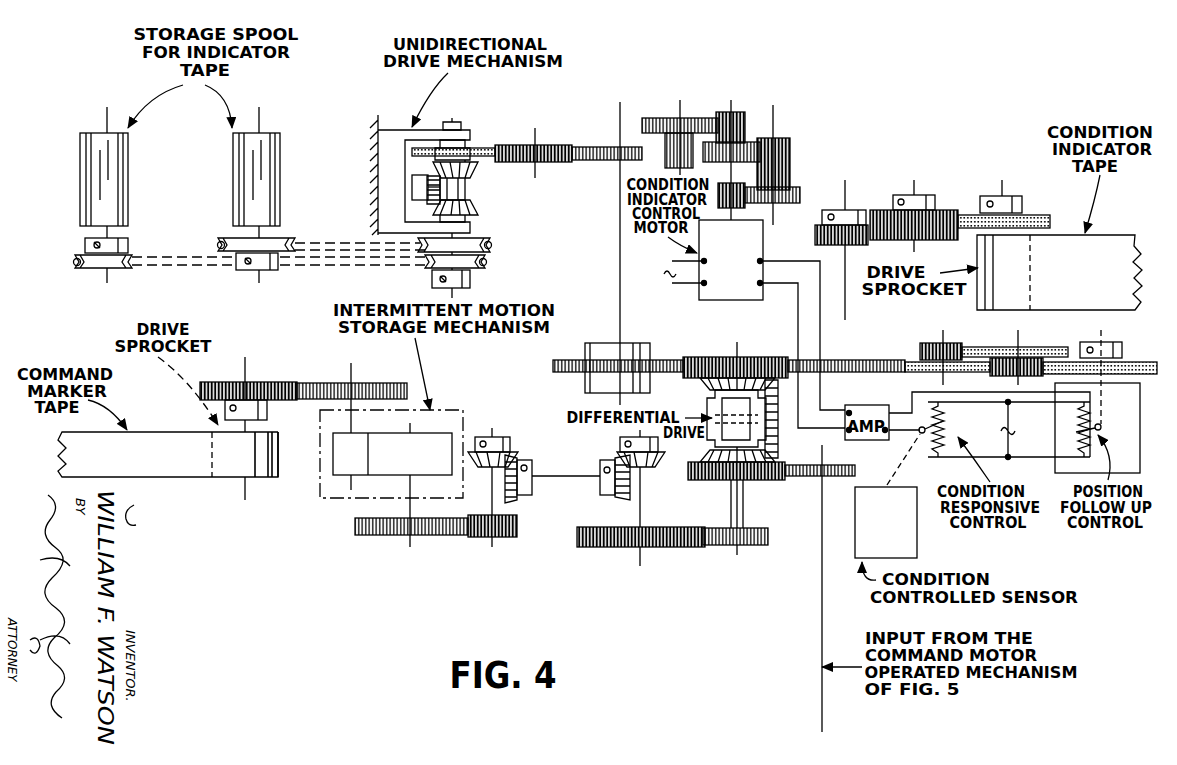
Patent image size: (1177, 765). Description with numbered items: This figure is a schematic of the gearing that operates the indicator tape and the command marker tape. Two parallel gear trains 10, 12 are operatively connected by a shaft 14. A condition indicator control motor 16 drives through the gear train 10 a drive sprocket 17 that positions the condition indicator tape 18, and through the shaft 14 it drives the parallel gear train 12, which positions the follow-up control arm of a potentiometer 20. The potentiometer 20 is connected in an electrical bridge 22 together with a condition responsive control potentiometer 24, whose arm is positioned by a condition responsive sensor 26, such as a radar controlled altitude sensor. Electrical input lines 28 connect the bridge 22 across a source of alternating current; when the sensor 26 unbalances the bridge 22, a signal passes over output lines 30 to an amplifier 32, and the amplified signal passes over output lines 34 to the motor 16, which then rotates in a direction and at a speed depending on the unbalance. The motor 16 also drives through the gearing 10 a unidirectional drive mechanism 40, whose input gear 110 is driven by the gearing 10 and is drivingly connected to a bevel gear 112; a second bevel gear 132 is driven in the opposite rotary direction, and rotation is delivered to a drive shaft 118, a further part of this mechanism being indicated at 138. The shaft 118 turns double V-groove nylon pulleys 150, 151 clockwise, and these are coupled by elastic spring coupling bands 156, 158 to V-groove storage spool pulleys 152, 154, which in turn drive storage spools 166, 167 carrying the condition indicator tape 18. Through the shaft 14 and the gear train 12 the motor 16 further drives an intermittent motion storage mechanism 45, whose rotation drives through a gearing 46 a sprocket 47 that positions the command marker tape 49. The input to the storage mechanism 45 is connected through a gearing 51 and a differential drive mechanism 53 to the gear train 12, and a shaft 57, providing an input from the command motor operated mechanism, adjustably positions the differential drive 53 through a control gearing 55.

The gear train 10 is at (798, 125).
The parallel gear train 12 is at (679, 350).
The shaft 14 is at (620, 226).
The condition indicator control motor 16 is at (722, 292).
The drive sprocket 17 is at (995, 301).
The condition indicator tape 18 is at (1079, 301).
The potentiometer 20 is at (1115, 428).
The electrical bridge 22 is at (1031, 433).
The condition responsive control potentiometer 24 is at (941, 440).
The condition responsive sensor 26 is at (881, 552).
The electrical input lines 28 is at (1006, 412).
The output lines 30 is at (905, 408).
The amplifier 32 is at (866, 440).
The output lines 34 is at (788, 292).
The unidirectional drive mechanism 40 is at (483, 141).
The intermittent motion storage mechanism 45 is at (465, 418).
The gearing 46 is at (280, 381).
The sprocket 47 is at (263, 471).
The command marker tape 49 is at (157, 477).
The gearing 51 is at (615, 551).
The differential drive mechanism 53 is at (777, 438).
The control gearing 55 is at (812, 478).
The shaft 57 is at (822, 605).
The input gear 110 is at (483, 163).
The bevel gear 112 is at (426, 176).
The drive shaft 118 is at (456, 232).
The second bevel gear 132 is at (426, 184).
The bevel gear 138 is at (470, 190).
The double V-groove nylon pulley 150 is at (484, 240).
The double V-groove nylon pulley 151 is at (482, 267).
The V-groove nylon pulley 152 is at (274, 240).
The V-groove nylon pulley 154 is at (117, 269).
The elastic spring coupling band 156 is at (322, 243).
The elastic spring coupling band 158 is at (193, 268).
The storage spool 166 is at (233, 160).
The storage spool 167 is at (80, 160).